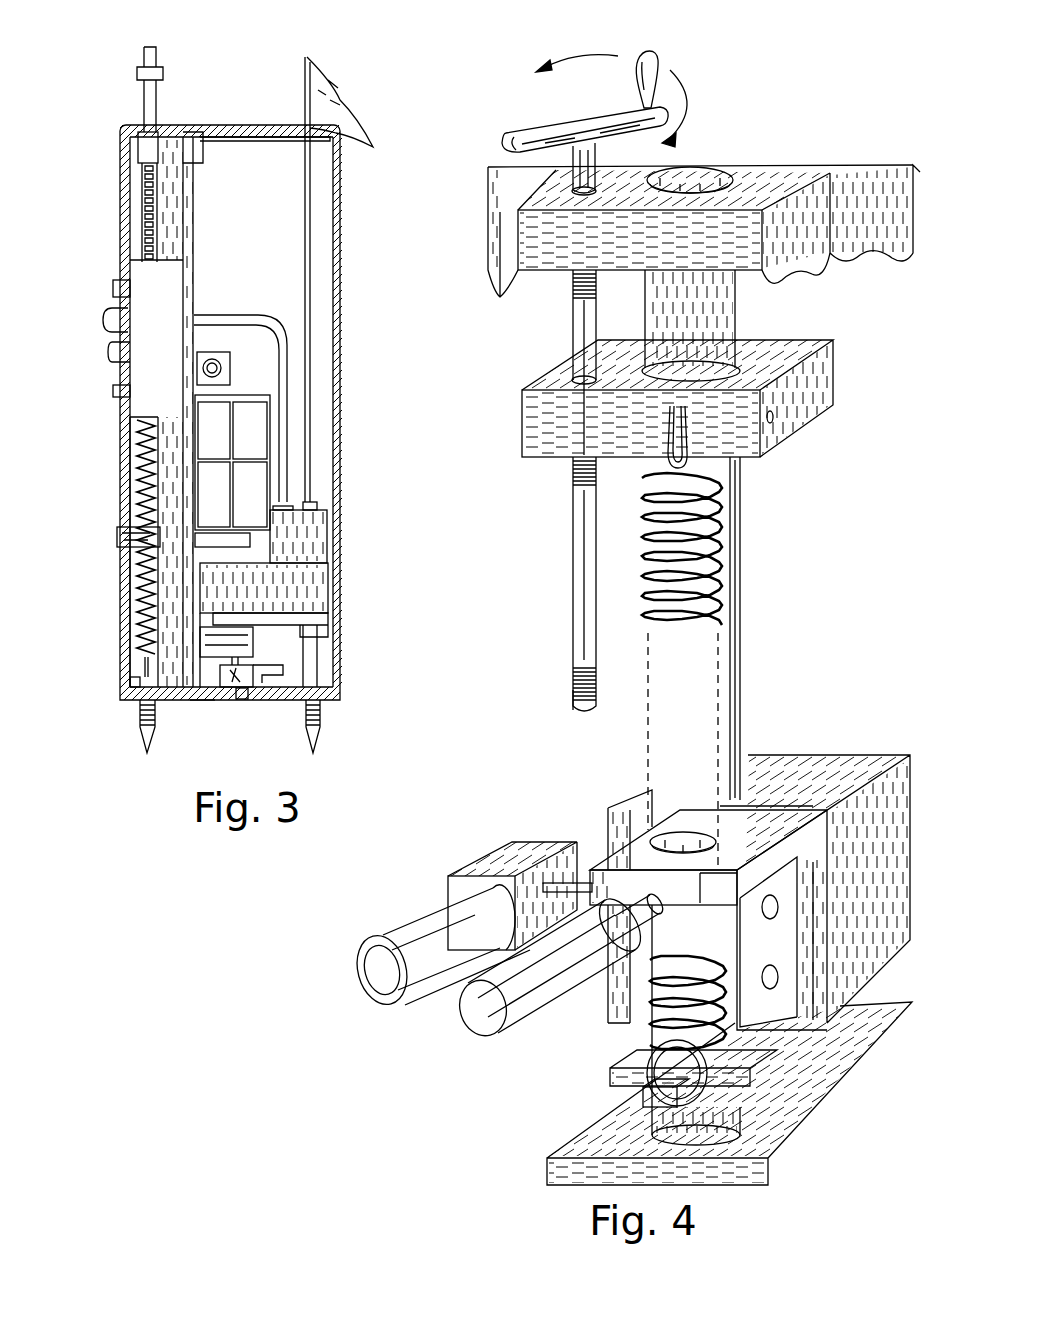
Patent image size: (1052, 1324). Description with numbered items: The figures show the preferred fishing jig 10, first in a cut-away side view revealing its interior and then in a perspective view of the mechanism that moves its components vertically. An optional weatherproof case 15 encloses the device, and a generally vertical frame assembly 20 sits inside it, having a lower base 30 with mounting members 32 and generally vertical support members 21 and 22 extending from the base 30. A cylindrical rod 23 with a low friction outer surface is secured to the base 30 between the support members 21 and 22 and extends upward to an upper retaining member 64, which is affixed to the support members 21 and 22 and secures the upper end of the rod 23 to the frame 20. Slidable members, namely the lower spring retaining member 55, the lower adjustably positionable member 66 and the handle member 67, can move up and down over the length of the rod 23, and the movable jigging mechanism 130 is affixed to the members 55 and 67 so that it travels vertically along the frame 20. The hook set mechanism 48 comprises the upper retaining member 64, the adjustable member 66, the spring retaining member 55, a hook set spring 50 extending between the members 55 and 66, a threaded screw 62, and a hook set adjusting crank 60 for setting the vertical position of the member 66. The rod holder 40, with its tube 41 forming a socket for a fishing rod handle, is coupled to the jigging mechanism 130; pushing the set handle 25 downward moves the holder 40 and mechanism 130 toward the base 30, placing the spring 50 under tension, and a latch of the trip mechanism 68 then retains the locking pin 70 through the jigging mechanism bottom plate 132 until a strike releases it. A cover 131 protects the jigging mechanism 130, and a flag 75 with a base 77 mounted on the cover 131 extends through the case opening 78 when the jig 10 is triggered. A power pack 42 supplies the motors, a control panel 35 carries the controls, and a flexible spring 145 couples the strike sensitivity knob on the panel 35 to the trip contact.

In FIG. 3, the fishing jig 10 is at (378, 82).
In FIG. 3, the weatherproof case 15 is at (245, 122).
In FIG. 3, the frame assembly 20 is at (178, 212).
In FIG. 4, the vertical support member 21 is at (492, 187).
In FIG. 4, the vertical support member 22 is at (873, 254).
In FIG. 4, the cylindrical rod 23 is at (694, 173).
In FIG. 4, the set handle 25 is at (529, 1021).
In FIG. 3, the lower base 30 is at (232, 692).
In FIG. 4, the lower base 30 is at (774, 1131).
In FIG. 3, the mounting members 32 is at (139, 717).
In FIG. 3, the control panel 35 is at (142, 309).
In FIG. 4, the rod holder 40 is at (488, 863).
In FIG. 4, the tube 41 is at (408, 930).
In FIG. 3, the power pack 42 is at (254, 433).
In FIG. 3, the hook set mechanism 48 is at (139, 440).
In FIG. 4, the hook set mechanism 48 is at (536, 709).
In FIG. 3, the hook set spring 50 is at (140, 483).
In FIG. 4, the hook set spring 50 is at (723, 584).
In FIG. 3, the lower spring retaining member 55 is at (128, 687).
In FIG. 4, the lower spring retaining member 55 is at (744, 1052).
In FIG. 3, the hook set adjusting crank 60 is at (141, 66).
In FIG. 4, the hook set adjusting crank 60 is at (533, 127).
In FIG. 3, the threaded screw 62 is at (146, 200).
In FIG. 4, the threaded screw 62 is at (572, 324).
In FIG. 3, the upper retaining member 64 is at (139, 136).
In FIG. 4, the upper retaining member 64 is at (767, 203).
In FIG. 4, the lower adjustably positionable member 66 is at (811, 338).
In FIG. 3, the handle member 67 is at (130, 536).
In FIG. 4, the handle member 67 is at (757, 818).
In FIG. 3, the trip mechanism 68 is at (199, 716).
In FIG. 3, the locking pin 70 is at (241, 694).
In FIG. 3, the flag 75 is at (325, 72).
In FIG. 3, the flag base 77 is at (318, 503).
In FIG. 3, the case opening 78 is at (304, 128).
In FIG. 3, the movable jigging mechanism 130 is at (288, 584).
In FIG. 4, the movable jigging mechanism 130 is at (850, 830).
In FIG. 3, the cover 131 is at (308, 543).
In FIG. 3, the jigging mechanism bottom plate 132 is at (254, 644).
In FIG. 3, the flexible spring 145 is at (282, 356).